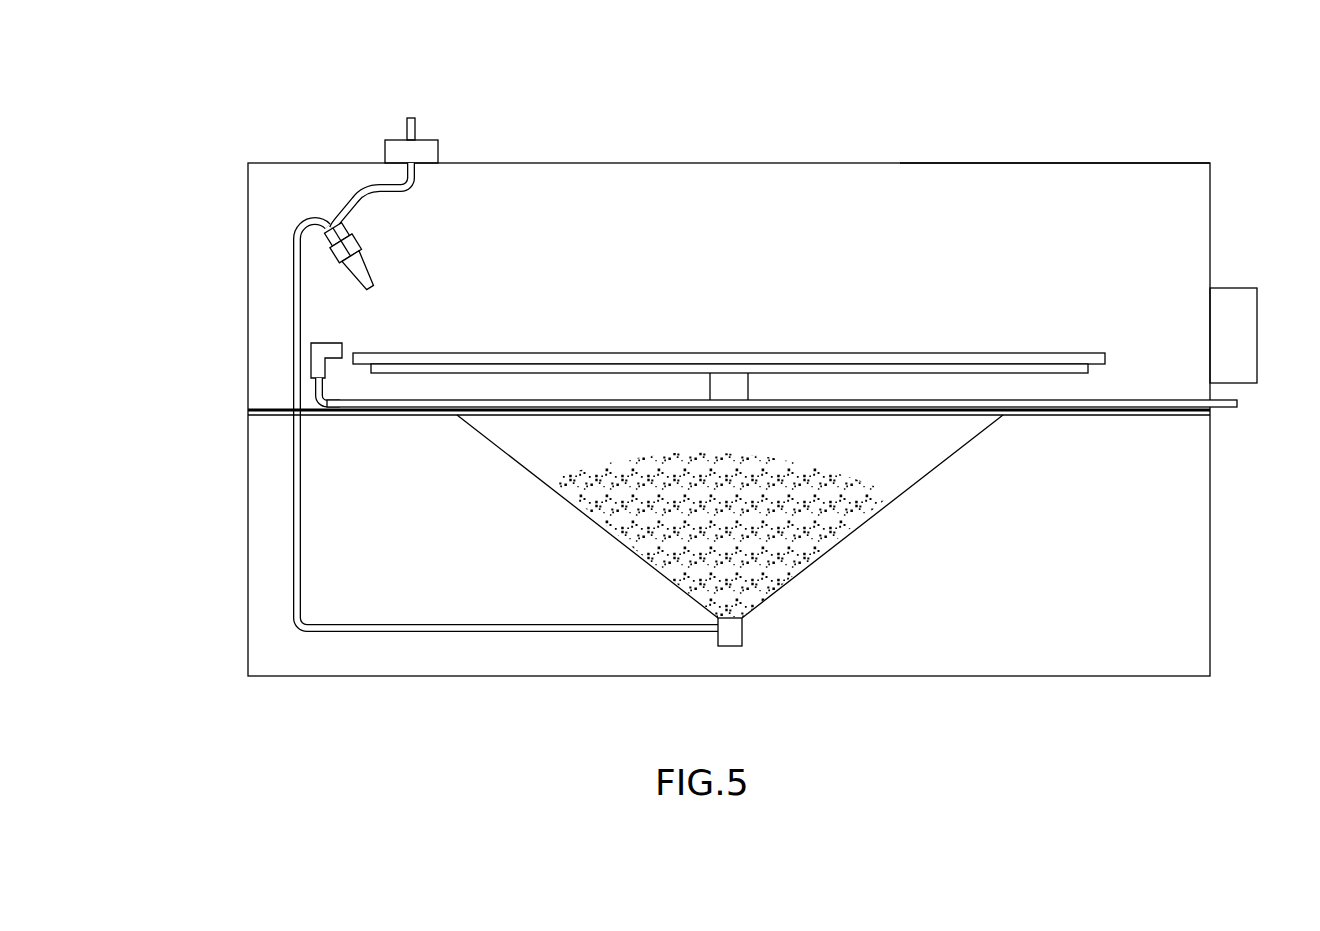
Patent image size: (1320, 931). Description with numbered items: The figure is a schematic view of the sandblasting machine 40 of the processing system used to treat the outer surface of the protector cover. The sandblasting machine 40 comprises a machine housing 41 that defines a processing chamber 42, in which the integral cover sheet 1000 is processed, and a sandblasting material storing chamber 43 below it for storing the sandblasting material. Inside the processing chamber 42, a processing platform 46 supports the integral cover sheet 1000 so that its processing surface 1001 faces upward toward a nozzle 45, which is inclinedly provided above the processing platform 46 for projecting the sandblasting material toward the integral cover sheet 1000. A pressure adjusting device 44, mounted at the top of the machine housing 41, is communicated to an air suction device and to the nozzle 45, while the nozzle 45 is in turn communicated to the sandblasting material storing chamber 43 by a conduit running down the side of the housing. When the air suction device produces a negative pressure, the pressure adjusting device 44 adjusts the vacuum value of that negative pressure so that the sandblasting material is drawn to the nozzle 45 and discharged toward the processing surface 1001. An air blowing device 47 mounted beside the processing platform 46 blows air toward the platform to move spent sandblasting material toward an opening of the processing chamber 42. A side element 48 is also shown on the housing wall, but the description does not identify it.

The sandblasting machine 40 is at (1118, 163).
The machine housing 41 is at (1033, 163).
The processing chamber 42 is at (765, 260).
The sandblasting material storing chamber 43 is at (872, 460).
The pressure adjusting device 44 is at (417, 152).
The nozzle 45 is at (345, 242).
The processing platform 46 is at (1052, 370).
The air blowing device 47 is at (325, 353).
The side port 48 is at (1220, 337).
The integral cover sheet 1000 is at (900, 357).
The processing surface 1001 is at (572, 352).